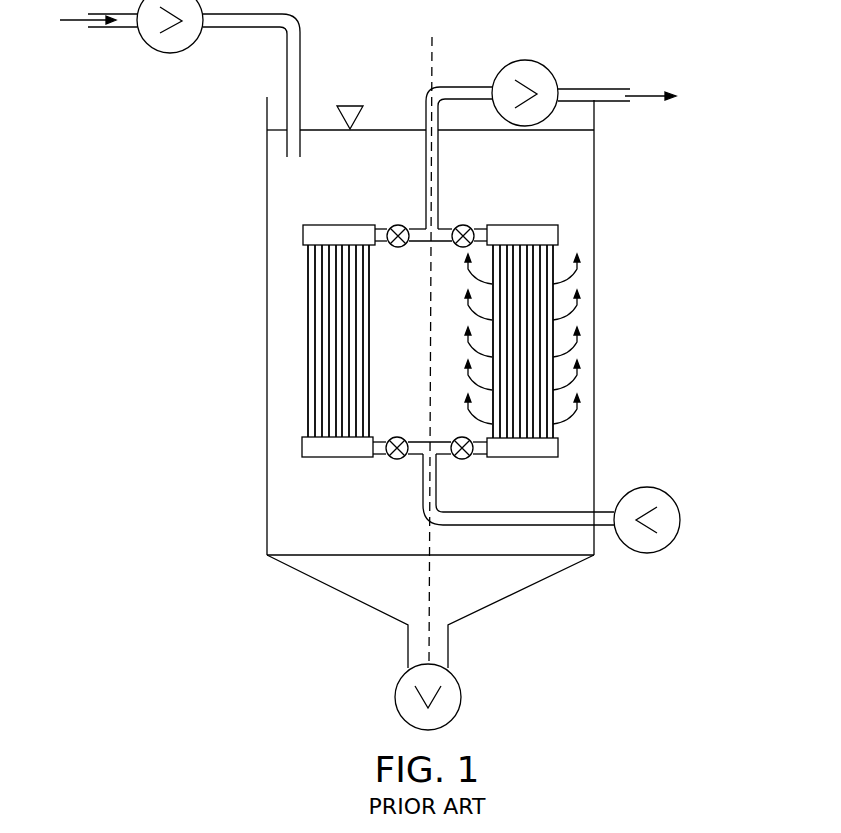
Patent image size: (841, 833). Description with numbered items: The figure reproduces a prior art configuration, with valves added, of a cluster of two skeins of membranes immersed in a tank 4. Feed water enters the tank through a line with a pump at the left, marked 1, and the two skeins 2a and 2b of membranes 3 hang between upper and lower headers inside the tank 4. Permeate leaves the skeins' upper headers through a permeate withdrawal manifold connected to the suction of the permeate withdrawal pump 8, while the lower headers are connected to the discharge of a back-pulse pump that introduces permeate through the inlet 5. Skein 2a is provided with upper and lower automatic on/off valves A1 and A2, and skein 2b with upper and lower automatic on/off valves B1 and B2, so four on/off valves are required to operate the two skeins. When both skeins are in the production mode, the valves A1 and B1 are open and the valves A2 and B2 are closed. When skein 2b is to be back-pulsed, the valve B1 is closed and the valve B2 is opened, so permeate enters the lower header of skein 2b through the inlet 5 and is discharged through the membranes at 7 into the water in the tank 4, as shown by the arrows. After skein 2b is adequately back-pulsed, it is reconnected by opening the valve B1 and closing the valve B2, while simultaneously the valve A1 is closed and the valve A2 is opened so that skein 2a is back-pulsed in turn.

The feed pump / raw water inlet 1 is at (170, 78).
The skein 2a is at (343, 225).
The skein 2b is at (525, 225).
The membranes 3 is at (308, 300).
The tank 4 is at (267, 182).
The inlet 5 is at (680, 521).
The discharge through the membranes 7 is at (576, 318).
The permeate withdrawal pump 8 is at (527, 33).
The upper automatic on/off valve A1 is at (397, 225).
The lower automatic on/off valve A2 is at (393, 459).
The upper automatic on/off valve B1 is at (463, 225).
The lower automatic on/off valve B2 is at (466, 459).